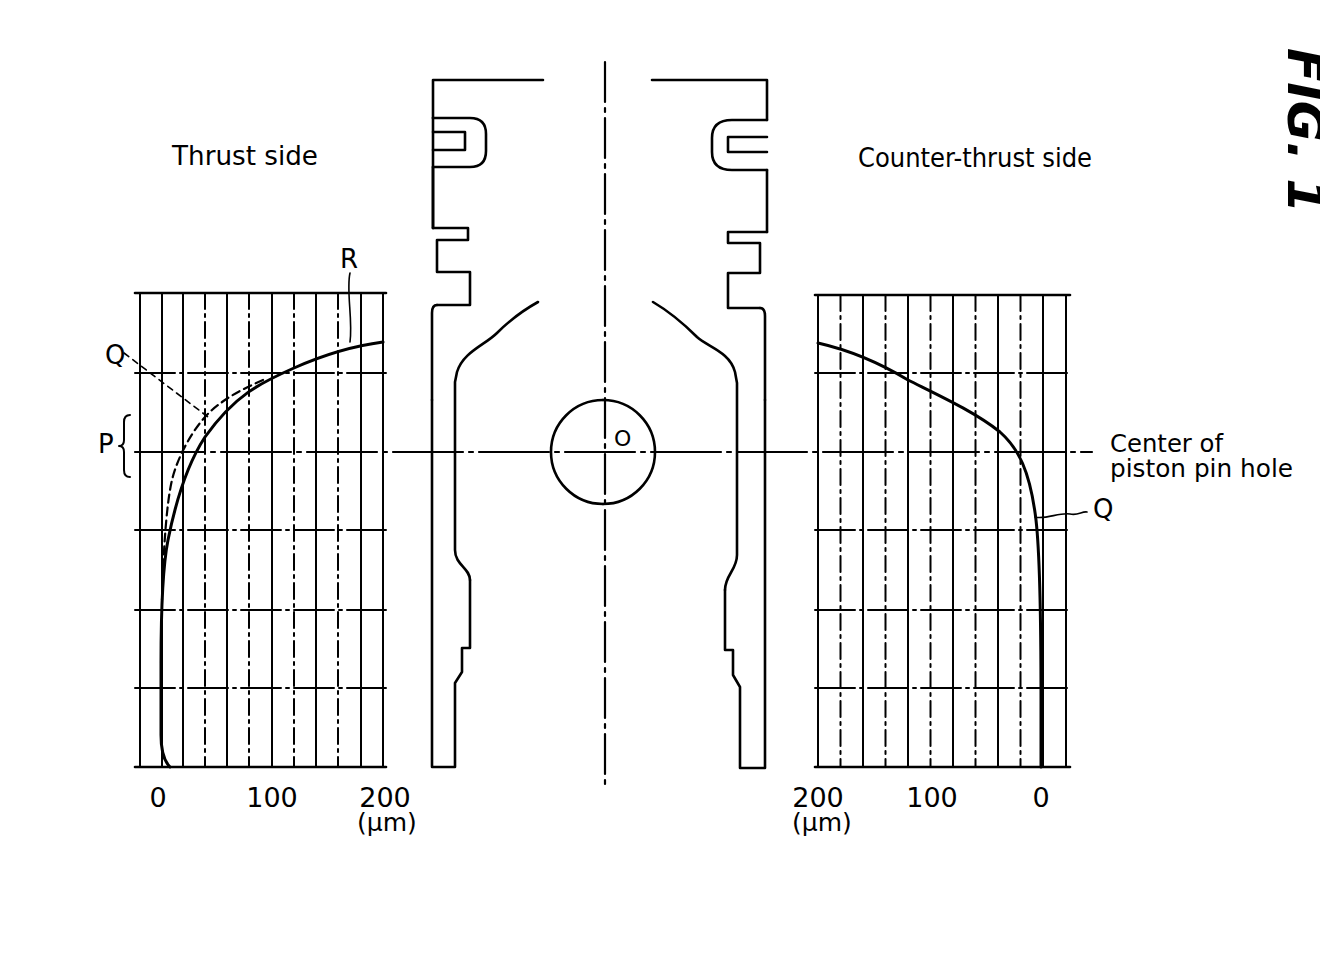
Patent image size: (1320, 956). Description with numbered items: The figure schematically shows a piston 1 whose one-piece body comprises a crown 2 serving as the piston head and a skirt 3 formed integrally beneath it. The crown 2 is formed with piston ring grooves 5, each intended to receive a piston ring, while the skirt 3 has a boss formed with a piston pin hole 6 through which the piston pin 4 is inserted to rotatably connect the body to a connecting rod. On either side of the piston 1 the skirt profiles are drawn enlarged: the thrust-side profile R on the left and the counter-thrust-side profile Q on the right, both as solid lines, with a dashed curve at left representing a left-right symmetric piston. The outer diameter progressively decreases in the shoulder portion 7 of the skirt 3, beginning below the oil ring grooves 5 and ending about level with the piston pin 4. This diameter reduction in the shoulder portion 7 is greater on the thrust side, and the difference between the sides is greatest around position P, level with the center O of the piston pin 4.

The piston 1 is at (625, 396).
The crown 2 is at (735, 108).
The skirt 3 is at (447, 678).
The piston pin 4 is at (580, 477).
The piston ring grooves 5 is at (748, 148).
The piston pin hole 6 is at (645, 465).
The shoulder portion 7 is at (780, 500).